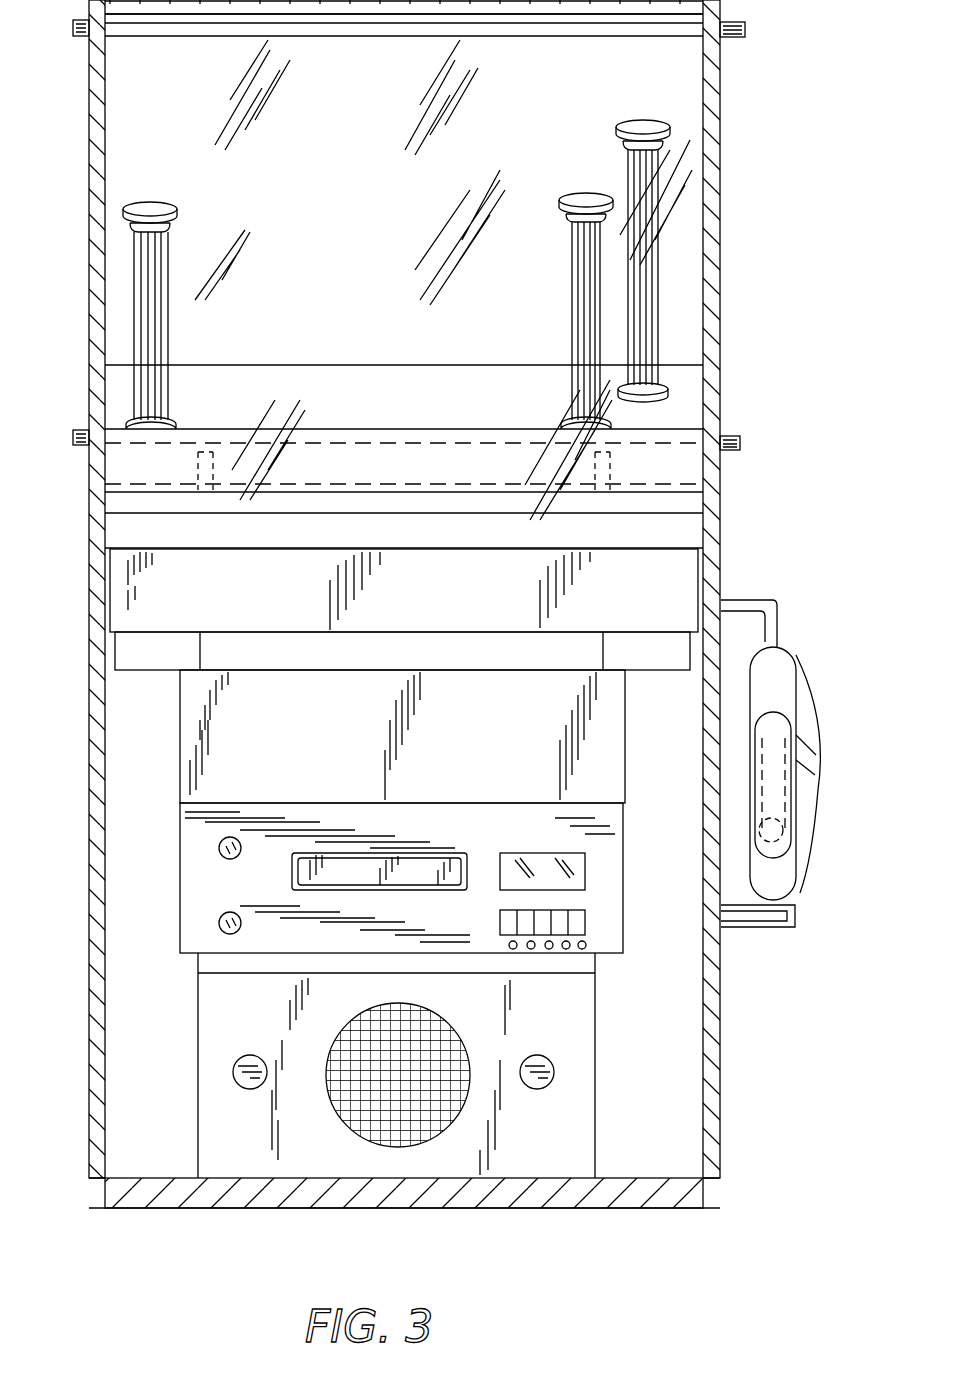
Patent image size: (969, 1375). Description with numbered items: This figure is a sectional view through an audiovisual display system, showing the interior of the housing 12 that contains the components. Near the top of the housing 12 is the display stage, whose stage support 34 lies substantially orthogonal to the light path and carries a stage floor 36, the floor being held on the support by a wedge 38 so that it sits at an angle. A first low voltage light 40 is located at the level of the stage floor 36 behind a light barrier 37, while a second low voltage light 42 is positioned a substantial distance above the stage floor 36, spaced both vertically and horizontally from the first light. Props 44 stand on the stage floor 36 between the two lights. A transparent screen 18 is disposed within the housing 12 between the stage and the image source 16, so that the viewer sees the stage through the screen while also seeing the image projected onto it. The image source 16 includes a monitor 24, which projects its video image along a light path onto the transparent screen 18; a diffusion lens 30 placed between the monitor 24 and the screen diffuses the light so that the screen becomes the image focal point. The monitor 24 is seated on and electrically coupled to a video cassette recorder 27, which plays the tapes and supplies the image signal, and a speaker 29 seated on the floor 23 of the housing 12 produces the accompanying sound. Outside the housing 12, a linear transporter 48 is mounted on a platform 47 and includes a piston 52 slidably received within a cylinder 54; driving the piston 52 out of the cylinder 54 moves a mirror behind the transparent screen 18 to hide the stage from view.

The housing 12 is at (718, 292).
The image source 16 is at (140, 1036).
The transparent screen 18 is at (356, 239).
The floor 23 is at (668, 1162).
The monitor 24 is at (356, 749).
The video cassette recorder 27 is at (500, 843).
The speaker 29 is at (570, 1023).
The diffusion lens 30 is at (688, 566).
The stage support 34 is at (440, 512).
The stage floor 36 is at (386, 400).
The light barrier 37 is at (690, 476).
The wedge 38 is at (236, 425).
The first low voltage light 40 is at (690, 432).
The second low voltage light 42 is at (604, 38).
The props 44 is at (156, 206).
The platform 47 is at (802, 898).
The linear transporter 48 is at (802, 652).
The piston 52 is at (774, 600).
The cylinder 54 is at (790, 822).